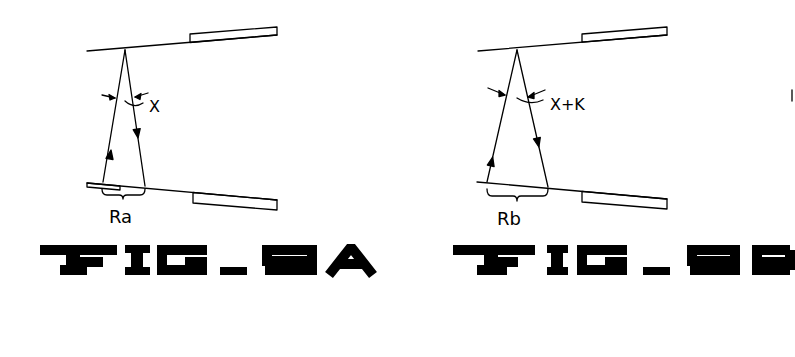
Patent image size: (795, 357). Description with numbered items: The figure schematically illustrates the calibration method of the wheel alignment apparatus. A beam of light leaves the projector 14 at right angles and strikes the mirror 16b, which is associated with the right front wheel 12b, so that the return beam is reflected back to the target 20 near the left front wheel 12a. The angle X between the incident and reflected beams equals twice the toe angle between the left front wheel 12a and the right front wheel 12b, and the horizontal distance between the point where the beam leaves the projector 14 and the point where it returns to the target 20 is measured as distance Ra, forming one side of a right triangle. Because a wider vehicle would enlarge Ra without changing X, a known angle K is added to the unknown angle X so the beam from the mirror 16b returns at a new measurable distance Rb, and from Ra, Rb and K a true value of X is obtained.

In FIG. 9A, the mirror 16b is at (93, 50).
In FIG. 9B, the mirror 16b is at (538, 46).
In FIG. 9A, the right front wheel 12b is at (277, 32).
In FIG. 9B, the right front wheel 12b is at (667, 32).
In FIG. 9A, the left front wheel 12a is at (255, 192).
In FIG. 9B, the left front wheel 12a is at (645, 193).
In FIG. 9A, the target 20 is at (160, 187).
In FIG. 9A, the projector 14 is at (93, 182).